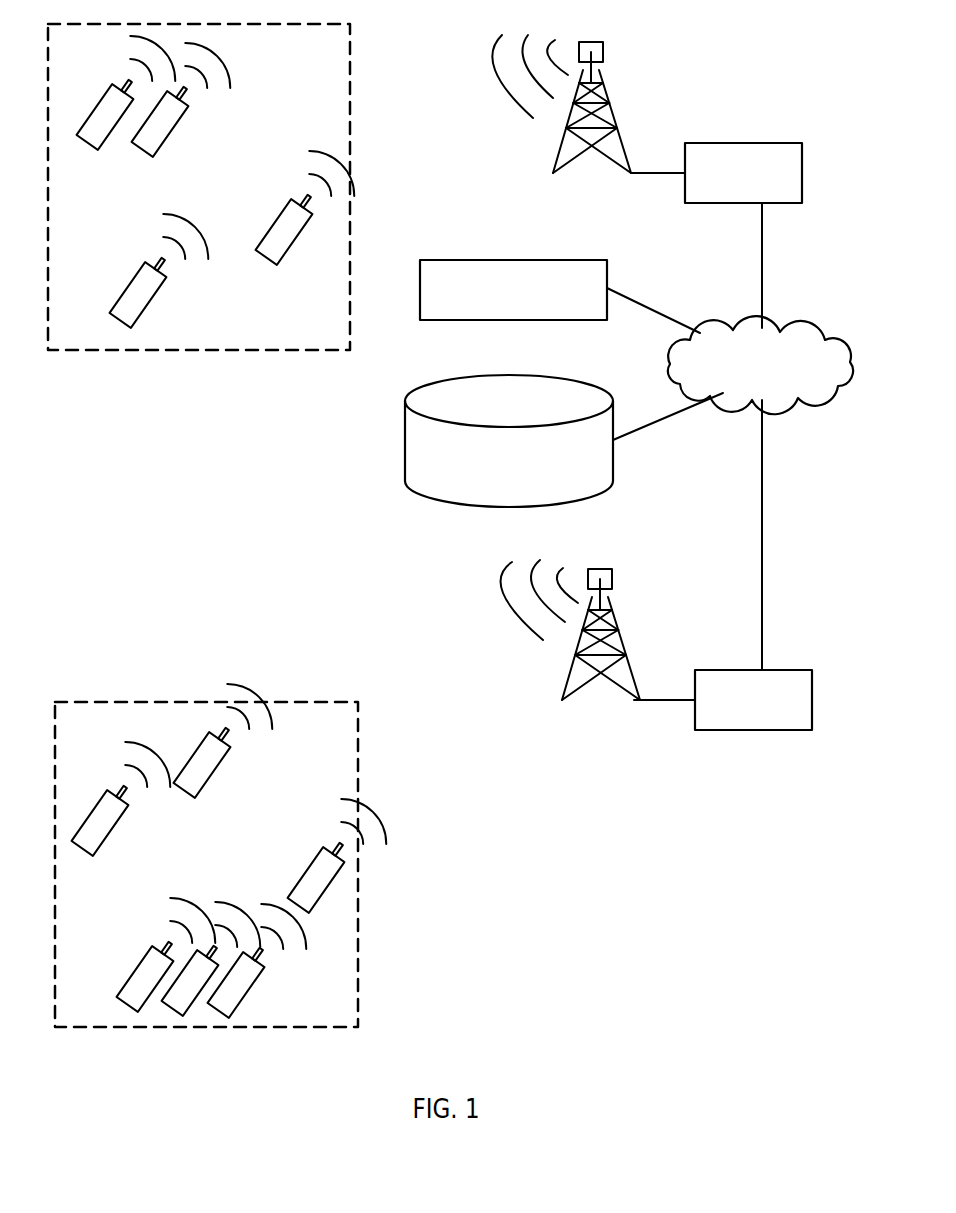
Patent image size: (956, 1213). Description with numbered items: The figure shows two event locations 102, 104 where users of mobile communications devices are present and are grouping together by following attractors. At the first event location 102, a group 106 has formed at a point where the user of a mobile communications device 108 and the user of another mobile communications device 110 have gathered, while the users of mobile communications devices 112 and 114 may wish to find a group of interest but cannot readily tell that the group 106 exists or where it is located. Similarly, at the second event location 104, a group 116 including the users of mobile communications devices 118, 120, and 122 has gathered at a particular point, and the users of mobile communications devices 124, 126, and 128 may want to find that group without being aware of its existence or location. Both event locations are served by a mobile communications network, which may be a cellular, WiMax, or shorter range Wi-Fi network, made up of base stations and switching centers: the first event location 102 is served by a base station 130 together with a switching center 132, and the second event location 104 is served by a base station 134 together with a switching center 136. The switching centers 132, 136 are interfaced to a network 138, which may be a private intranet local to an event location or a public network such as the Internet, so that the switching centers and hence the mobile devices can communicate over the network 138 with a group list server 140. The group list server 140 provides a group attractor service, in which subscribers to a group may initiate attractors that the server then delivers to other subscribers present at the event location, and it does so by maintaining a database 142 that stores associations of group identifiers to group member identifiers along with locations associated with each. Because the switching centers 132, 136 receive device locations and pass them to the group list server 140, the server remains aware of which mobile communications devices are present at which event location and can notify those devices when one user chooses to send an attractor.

The first event location 102 is at (352, 118).
The second event location 104 is at (360, 742).
The group 106 is at (118, 174).
The mobile communications device 108 is at (86, 141).
The mobile communications device 110 is at (164, 143).
The mobile communications device 112 is at (112, 311).
The mobile communications device 114 is at (264, 258).
The group 116 is at (139, 932).
The mobile communications device 118 is at (126, 1005).
The mobile communications device 120 is at (170, 1009).
The mobile communications device 122 is at (217, 1011).
The mobile communications device 124 is at (78, 853).
The mobile communications device 126 is at (204, 786).
The mobile communications device 128 is at (299, 907).
The base station 130 is at (560, 148).
The switching center 132 is at (734, 143).
The base station 134 is at (570, 673).
The switching center 136 is at (790, 670).
The network 138 is at (812, 397).
The group list server 140 is at (542, 260).
The database 142 is at (560, 375).